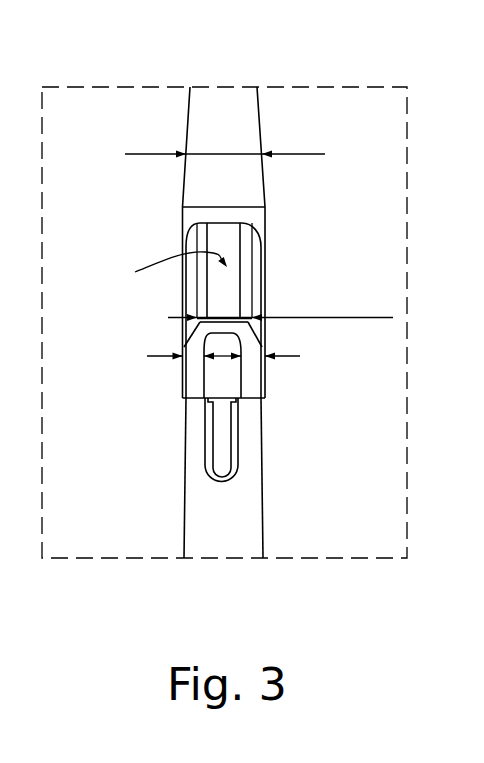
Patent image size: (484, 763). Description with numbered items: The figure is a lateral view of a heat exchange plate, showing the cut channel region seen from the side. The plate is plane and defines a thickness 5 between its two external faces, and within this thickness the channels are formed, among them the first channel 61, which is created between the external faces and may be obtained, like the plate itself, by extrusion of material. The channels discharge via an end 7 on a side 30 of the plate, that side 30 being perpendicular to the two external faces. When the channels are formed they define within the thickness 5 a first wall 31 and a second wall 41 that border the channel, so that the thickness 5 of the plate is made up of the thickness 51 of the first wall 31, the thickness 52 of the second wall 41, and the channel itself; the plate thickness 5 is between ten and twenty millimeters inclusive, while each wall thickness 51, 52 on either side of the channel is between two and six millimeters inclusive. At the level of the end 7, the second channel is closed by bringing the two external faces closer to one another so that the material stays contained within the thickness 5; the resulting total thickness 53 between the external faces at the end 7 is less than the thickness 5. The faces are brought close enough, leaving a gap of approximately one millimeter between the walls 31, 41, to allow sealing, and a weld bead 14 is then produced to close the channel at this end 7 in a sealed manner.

The side 30 is at (220, 118).
The thickness 5 is at (225, 141).
The weld bead 14 is at (233, 282).
The end 7 is at (172, 268).
The distance 53 is at (280, 304).
The thickness of first wall 51 is at (169, 355).
The thickness of second wall 52 is at (278, 355).
The first wall 31 is at (198, 383).
The second wall 41 is at (250, 385).
The first channel 61 is at (220, 427).